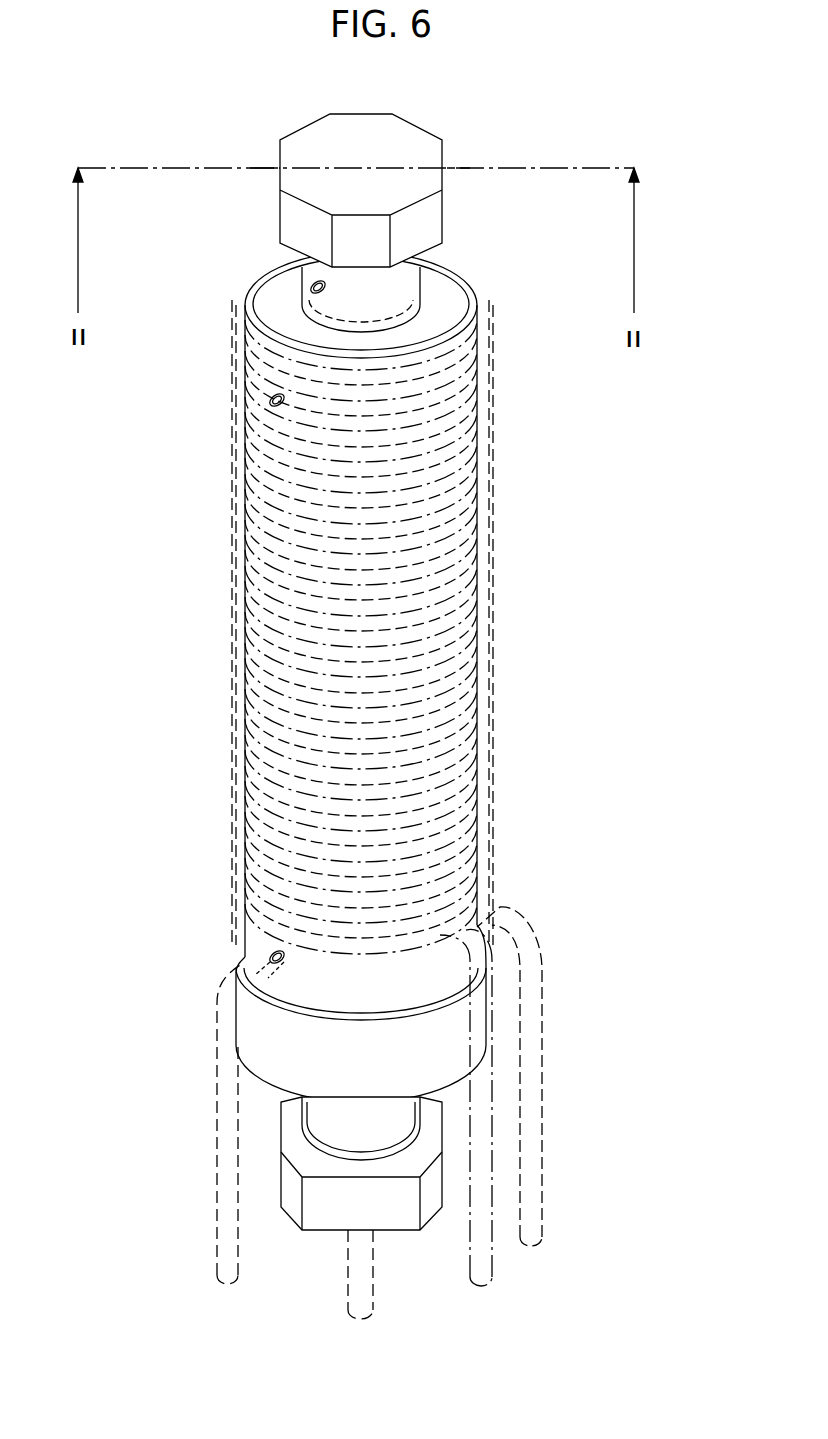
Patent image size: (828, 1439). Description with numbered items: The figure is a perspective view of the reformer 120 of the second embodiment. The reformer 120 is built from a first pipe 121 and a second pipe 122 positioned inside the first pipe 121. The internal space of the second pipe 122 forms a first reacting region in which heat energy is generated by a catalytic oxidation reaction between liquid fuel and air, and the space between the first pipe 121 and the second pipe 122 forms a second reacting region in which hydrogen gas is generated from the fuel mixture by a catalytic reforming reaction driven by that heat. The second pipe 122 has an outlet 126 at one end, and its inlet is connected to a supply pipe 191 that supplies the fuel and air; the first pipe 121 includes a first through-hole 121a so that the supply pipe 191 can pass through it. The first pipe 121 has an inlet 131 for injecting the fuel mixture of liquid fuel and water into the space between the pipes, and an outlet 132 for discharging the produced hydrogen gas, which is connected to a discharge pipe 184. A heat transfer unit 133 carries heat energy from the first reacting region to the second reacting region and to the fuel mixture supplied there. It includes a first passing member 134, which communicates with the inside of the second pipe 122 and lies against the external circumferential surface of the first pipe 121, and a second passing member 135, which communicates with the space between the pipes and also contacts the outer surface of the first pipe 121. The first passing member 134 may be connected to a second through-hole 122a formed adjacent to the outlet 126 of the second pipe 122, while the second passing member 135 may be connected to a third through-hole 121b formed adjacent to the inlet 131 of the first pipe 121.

The reformer 120 is at (565, 137).
The first pipe 121 is at (477, 677).
The first through-hole 121a is at (250, 962).
The third through-hole 121b is at (267, 408).
The second pipe 122 is at (378, 287).
The second through-hole 122a is at (313, 290).
The outlet 126 is at (270, 172).
The inlet 131 is at (235, 297).
The outlet 132 is at (305, 1232).
The heat transfer unit 133 is at (469, 783).
The first passing member 134 is at (437, 293).
The second passing member 135 is at (362, 493).
The discharge pipe 184 is at (373, 1280).
The supply pipe 191 is at (215, 1093).